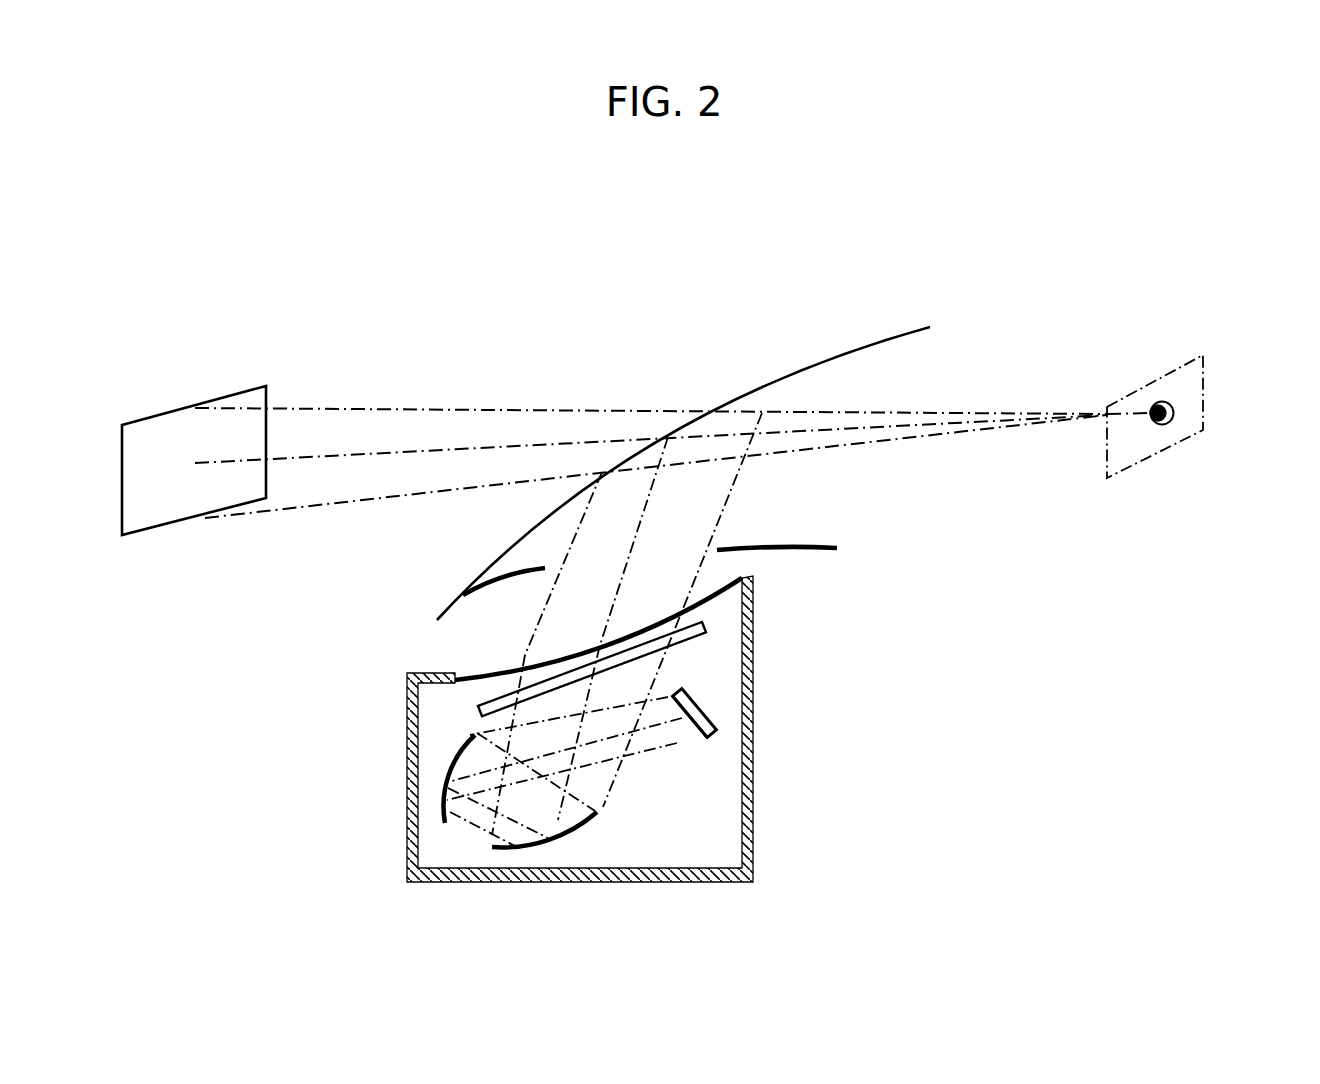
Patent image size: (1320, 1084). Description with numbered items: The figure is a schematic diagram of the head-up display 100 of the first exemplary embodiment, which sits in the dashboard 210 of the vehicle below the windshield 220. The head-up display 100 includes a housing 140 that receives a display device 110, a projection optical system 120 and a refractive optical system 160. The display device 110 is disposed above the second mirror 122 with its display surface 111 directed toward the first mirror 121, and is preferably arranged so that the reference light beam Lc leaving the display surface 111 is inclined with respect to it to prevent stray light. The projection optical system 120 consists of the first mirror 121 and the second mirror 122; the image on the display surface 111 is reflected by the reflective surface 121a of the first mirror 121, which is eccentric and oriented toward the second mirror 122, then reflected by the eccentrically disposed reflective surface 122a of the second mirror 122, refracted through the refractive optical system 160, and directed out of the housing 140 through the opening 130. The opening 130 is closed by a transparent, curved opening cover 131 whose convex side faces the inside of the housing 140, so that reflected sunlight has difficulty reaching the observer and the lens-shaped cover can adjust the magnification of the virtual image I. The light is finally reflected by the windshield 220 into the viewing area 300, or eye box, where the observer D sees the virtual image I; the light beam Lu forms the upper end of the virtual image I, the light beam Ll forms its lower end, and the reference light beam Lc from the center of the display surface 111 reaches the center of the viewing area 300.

The head-up display 100 is at (316, 661).
The display device 110 is at (714, 736).
The display surface 111 is at (690, 735).
The projection optical system 120 is at (413, 835).
The first mirror 121 is at (372, 779).
The reflective surface of first mirror 121a is at (473, 738).
The second mirror 122 is at (446, 874).
The reflective surface of second mirror 122a is at (558, 828).
The opening 130 is at (605, 629).
The opening cover 131 is at (722, 588).
The housing 140 is at (756, 660).
The refractive optical system 160 is at (478, 710).
The dashboard 210 is at (503, 592).
The windshield 220 is at (793, 378).
The viewing area 300 is at (1185, 365).
The observer D is at (1175, 408).
The virtual image I is at (171, 410).
The light beam Lu is at (382, 408).
The reference light beam Lc is at (508, 443).
The light beam Ll is at (327, 503).